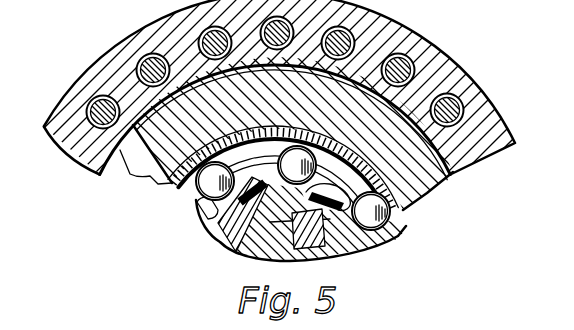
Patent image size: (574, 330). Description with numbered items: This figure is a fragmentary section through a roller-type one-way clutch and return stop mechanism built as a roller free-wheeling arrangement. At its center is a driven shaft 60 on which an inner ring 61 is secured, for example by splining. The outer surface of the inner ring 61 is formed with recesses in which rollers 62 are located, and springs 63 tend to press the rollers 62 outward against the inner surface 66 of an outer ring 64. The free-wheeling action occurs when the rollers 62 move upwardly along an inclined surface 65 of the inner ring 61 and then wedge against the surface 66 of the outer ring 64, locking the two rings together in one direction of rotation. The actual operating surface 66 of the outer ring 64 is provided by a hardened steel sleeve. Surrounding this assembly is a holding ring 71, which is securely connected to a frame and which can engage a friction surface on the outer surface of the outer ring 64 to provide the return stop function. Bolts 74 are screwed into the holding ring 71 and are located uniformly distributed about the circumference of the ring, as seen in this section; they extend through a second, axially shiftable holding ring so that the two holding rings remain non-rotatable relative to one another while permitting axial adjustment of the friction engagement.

The driven shaft 60 is at (240, 254).
The inner ring 61 is at (217, 242).
The rollers 62 is at (193, 207).
The springs 63 is at (346, 251).
The outer ring 64 is at (420, 202).
The inclined surface 65 is at (442, 192).
The inner surface 66 is at (178, 197).
The holding ring 71 is at (100, 67).
The bolts 74 is at (447, 93).